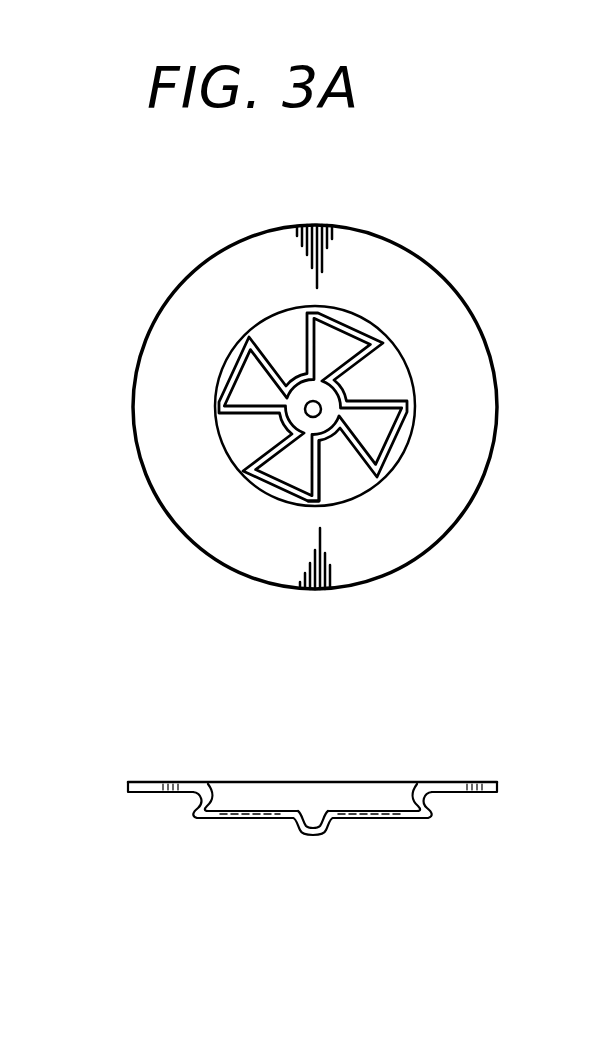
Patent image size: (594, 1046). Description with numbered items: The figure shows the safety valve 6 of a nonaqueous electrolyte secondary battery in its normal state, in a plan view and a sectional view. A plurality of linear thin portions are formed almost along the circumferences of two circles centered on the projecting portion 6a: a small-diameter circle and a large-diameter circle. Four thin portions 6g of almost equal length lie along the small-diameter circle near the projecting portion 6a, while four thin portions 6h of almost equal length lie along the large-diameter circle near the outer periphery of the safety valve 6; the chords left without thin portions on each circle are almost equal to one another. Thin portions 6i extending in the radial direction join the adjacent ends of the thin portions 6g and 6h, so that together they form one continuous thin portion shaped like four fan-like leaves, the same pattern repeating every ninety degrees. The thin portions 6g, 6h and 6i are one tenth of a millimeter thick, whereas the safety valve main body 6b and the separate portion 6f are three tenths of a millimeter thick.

The safety valve 6 is at (339, 530).
The projecting portion 6a is at (321, 412).
The safety valve main body 6b is at (437, 298).
The separate portion 6f is at (385, 423).
The thin portions along the small-diameter circle 6g is at (350, 394).
The thin portions along the large-diameter circle 6h is at (322, 550).
The thin portions extending in the radial direction 6i is at (320, 480).